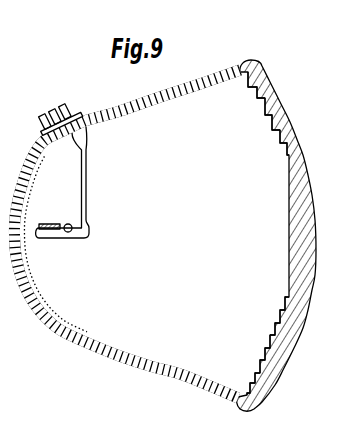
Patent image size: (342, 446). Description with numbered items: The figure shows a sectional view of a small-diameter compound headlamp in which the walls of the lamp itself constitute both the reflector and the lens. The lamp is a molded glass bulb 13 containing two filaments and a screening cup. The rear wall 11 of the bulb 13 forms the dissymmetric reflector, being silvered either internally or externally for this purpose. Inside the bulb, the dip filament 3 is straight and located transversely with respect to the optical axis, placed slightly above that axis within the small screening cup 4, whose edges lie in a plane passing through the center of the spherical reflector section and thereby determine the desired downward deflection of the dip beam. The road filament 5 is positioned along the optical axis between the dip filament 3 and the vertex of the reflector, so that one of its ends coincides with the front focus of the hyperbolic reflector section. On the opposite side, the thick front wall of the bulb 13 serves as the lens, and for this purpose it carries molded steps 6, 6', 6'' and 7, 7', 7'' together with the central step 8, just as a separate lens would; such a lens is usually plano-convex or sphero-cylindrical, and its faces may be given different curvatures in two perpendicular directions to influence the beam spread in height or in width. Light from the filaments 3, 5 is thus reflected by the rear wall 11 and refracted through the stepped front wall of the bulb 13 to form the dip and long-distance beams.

The dip filament 3 is at (68, 224).
The screening cup 4 is at (79, 238).
The road filament 5 is at (52, 224).
The molded step 6 is at (304, 142).
The molded step 6' is at (296, 117).
The molded step 6'' is at (285, 95).
The molded step 7 is at (289, 338).
The molded step 7' is at (284, 367).
The molded step 7'' is at (274, 395).
The molded step 8 is at (299, 202).
The rear wall of the bulb 11 is at (27, 167).
The bulb 13 is at (150, 353).